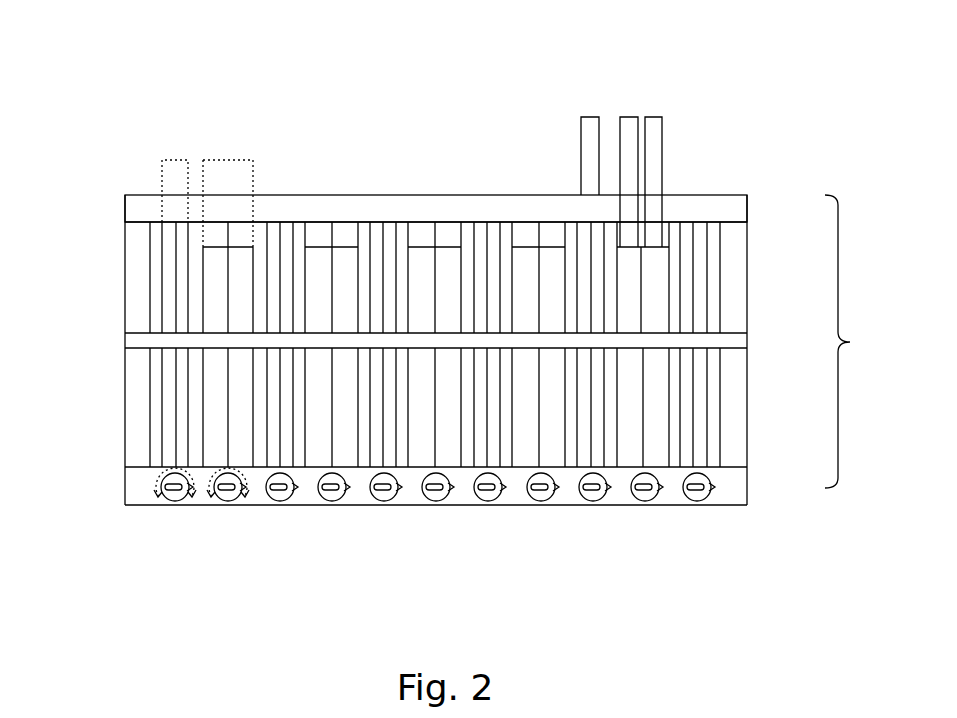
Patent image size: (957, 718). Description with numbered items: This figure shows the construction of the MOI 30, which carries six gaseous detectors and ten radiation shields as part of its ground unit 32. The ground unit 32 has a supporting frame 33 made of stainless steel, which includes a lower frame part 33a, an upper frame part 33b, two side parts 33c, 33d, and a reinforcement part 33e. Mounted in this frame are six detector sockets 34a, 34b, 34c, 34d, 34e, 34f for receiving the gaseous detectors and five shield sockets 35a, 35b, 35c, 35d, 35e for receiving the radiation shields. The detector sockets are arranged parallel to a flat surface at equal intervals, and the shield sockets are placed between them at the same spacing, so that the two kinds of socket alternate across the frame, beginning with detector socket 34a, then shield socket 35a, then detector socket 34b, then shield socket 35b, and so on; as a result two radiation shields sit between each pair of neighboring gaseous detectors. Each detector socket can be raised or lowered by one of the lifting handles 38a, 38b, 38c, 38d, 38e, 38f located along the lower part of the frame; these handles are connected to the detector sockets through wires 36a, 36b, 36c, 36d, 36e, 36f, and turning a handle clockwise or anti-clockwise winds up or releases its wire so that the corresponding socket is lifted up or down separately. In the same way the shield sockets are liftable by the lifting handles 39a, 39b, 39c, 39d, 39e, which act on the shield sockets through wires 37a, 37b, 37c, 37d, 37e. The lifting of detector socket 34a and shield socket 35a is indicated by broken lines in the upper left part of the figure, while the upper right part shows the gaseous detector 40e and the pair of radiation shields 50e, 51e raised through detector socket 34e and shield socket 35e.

The MOI 30 is at (358, 56).
The ground unit 32 is at (750, 194).
The supporting frame 33 is at (857, 341).
The lower frame part 33a is at (747, 484).
The upper frame part 33b is at (747, 210).
The side part 33c is at (747, 293).
The side part 33d is at (125, 432).
The reinforcement part 33e is at (747, 342).
The detector socket 34a is at (162, 163).
The detector socket 34b is at (302, 222).
The detector socket 34c is at (406, 222).
The detector socket 34d is at (476, 235).
The detector socket 34e is at (575, 233).
The detector socket 34f is at (713, 237).
The shield socket 35a is at (252, 158).
The shield socket 35b is at (349, 247).
The shield socket 35c is at (427, 247).
The shield socket 35d is at (514, 247).
The shield socket 35e is at (668, 246).
The wire 36a is at (176, 261).
The wire 36b is at (278, 448).
The wire 36c is at (384, 448).
The wire 36d is at (487, 448).
The wire 36e is at (591, 448).
The wire 36f is at (693, 450).
The wire 37a is at (225, 362).
The wire 37b is at (332, 447).
The wire 37c is at (436, 450).
The wire 37d is at (539, 447).
The wire 37e is at (643, 447).
The lifting handle 38a is at (177, 502).
The lifting handle 38b is at (281, 502).
The lifting handle 38c is at (385, 502).
The lifting handle 38d is at (489, 502).
The lifting handle 38e is at (593, 502).
The lifting handle 38f is at (697, 502).
The lifting handle 39a is at (229, 502).
The lifting handle 39b is at (333, 502).
The lifting handle 39c is at (437, 502).
The lifting handle 39d is at (541, 502).
The lifting handle 39e is at (645, 502).
The gaseous detector 40e is at (580, 137).
The radiation shield 50e is at (620, 118).
The radiation shield 51e is at (663, 118).